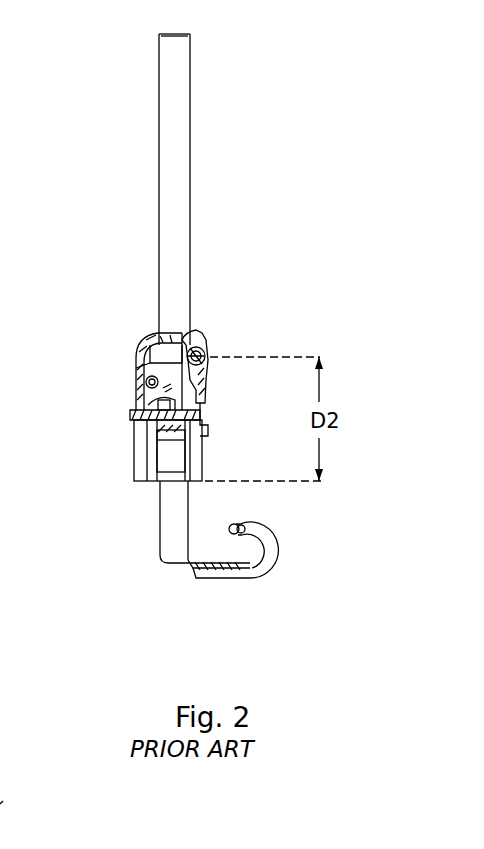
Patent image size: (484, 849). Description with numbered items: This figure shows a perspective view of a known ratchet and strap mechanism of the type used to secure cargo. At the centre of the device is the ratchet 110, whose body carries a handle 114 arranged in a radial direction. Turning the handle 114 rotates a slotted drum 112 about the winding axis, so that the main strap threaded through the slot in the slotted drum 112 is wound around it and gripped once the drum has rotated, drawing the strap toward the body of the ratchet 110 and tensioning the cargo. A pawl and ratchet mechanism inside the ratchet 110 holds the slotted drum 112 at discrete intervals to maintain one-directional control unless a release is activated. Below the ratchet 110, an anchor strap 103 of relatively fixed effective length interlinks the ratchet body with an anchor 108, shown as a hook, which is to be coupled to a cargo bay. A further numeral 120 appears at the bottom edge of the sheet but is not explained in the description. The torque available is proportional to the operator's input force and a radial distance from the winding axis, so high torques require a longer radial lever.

The ratchet 110 is at (126, 323).
The slotted drum 112 is at (214, 338).
The handle 114 is at (131, 477).
The anchor strap 103 is at (158, 532).
The anchor 108 is at (278, 566).
The mounting bracket 120 is at (45, 848).